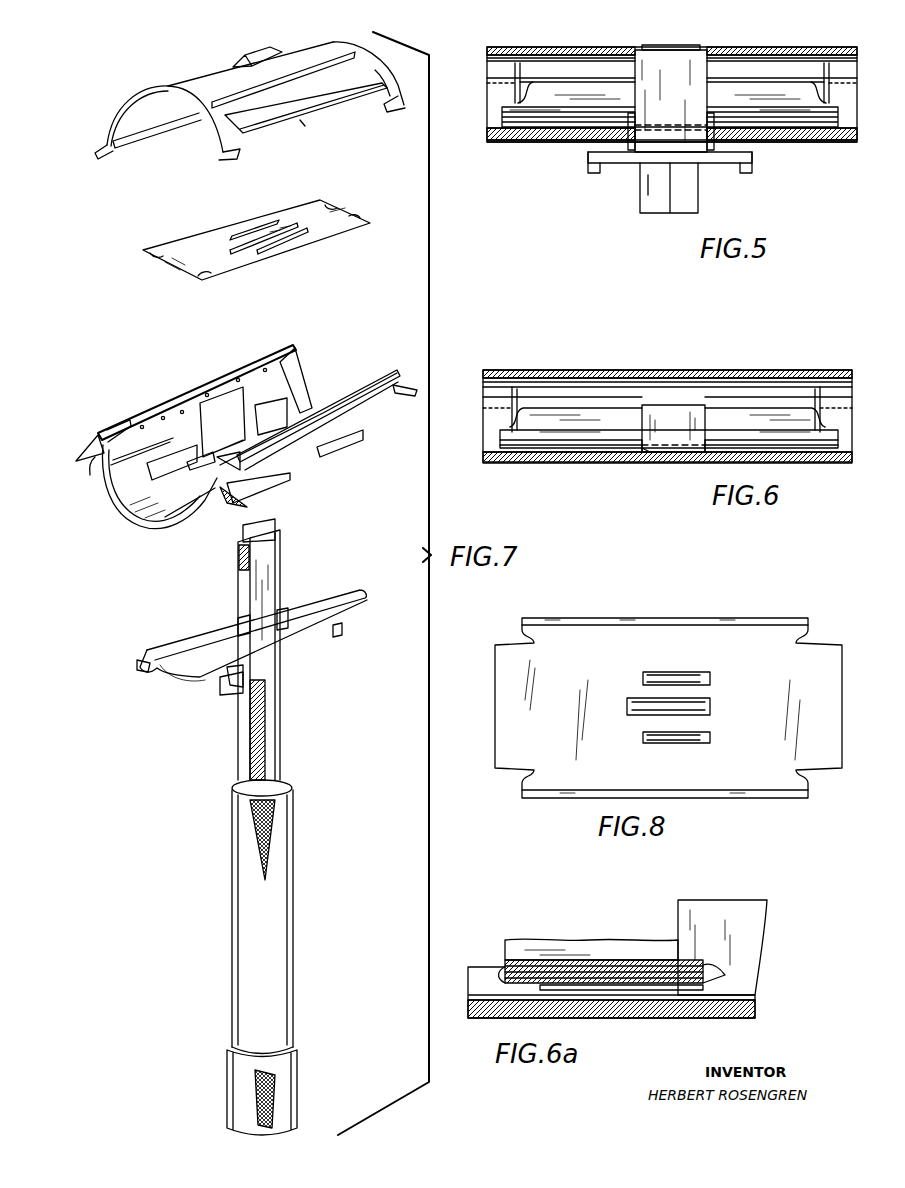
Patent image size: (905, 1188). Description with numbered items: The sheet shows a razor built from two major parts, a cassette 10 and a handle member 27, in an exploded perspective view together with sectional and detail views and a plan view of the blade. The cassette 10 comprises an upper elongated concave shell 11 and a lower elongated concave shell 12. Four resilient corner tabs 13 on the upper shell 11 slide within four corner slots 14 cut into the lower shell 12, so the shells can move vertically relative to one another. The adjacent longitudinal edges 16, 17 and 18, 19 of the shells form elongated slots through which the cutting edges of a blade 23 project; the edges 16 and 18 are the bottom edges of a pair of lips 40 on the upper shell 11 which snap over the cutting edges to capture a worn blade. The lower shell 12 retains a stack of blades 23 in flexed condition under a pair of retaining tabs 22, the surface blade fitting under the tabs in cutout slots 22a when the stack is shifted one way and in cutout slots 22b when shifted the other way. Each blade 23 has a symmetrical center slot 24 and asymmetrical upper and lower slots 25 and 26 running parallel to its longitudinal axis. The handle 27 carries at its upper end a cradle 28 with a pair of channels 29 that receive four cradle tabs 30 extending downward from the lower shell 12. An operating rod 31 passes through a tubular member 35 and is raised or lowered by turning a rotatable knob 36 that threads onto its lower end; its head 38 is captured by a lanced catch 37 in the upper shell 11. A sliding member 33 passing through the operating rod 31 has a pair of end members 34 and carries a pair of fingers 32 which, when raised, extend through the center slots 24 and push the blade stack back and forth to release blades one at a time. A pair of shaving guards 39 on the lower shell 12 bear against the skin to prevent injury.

In FIG. 5, the cassette 10 is at (469, 52).
In FIG. 6, the cassette 10 is at (484, 368).
In FIG. 7, the upper elongated concave shell 11 is at (253, 98).
In FIG. 5, the upper elongated concave shell 11 is at (790, 47).
In FIG. 6, the upper elongated concave shell 11 is at (768, 372).
In FIG. 7, the lower elongated concave shell 12 is at (244, 451).
In FIG. 5, the lower elongated concave shell 12 is at (651, 149).
In FIG. 6, the lower elongated concave shell 12 is at (644, 478).
In FIG. 6A, the lower elongated concave shell 12 is at (595, 1005).
In FIG. 7, the resilient corner tabs 13 is at (100, 152).
In FIG. 7, the corner slots 14 is at (300, 355).
In FIG. 7, the longitudinal edge 16 is at (300, 118).
In FIG. 7, the longitudinal edge 17 is at (244, 406).
In FIG. 7, the longitudinal edge 18 is at (150, 132).
In FIG. 7, the longitudinal edge 19 is at (160, 400).
In FIG. 7, the retaining tabs 22 is at (259, 423).
In FIG. 6, the retaining tabs 22 is at (675, 433).
In FIG. 8, the retaining tabs 22 is at (685, 672).
In FIG. 6A, the retaining tabs 22 is at (743, 933).
In FIG. 7, the cutout slots 22a is at (195, 468).
In FIG. 6, the cutout slots 22a is at (645, 462).
In FIG. 6A, the cutout slots 22a is at (725, 975).
In FIG. 7, the cutout slots 22b is at (262, 410).
In FIG. 6, the cutout slots 22b is at (700, 462).
In FIG. 7, the razor blade 23 is at (256, 240).
In FIG. 5, the razor blade 23 is at (502, 110).
In FIG. 6, the razor blade 23 is at (500, 436).
In FIG. 8, the razor blade 23 is at (668, 689).
In FIG. 6A, the razor blade 23 is at (603, 968).
In FIG. 7, the center slot 24 is at (240, 252).
In FIG. 8, the center slot 24 is at (710, 703).
In FIG. 6A, the center slot 24 is at (705, 978).
In FIG. 7, the upper slot 25 is at (270, 228).
In FIG. 8, the upper slot 25 is at (710, 676).
In FIG. 7, the lower slot 26 is at (285, 242).
In FIG. 8, the lower slot 26 is at (710, 740).
In FIG. 7, the handle member 27 is at (255, 957).
In FIG. 7, the cradle 28 is at (236, 667).
In FIG. 5, the cradle 28 is at (541, 144).
In FIG. 6, the cradle 28 is at (607, 464).
In FIG. 6A, the cradle 28 is at (638, 1018).
In FIG. 7, the channels 29 is at (140, 666).
In FIG. 7, the cradle tabs 30 is at (345, 455).
In FIG. 7, the operating rod 31 is at (264, 640).
In FIG. 5, the operating rod 31 is at (671, 114).
In FIG. 8, the operating rod 31 is at (650, 700).
In FIG. 7, the fingers 32 is at (240, 622).
In FIG. 5, the fingers 32 is at (628, 118).
In FIG. 8, the fingers 32 is at (710, 710).
In FIG. 5, the sliding member 33 is at (738, 172).
In FIG. 7, the end members 34 is at (345, 630).
In FIG. 5, the end members 34 is at (590, 175).
In FIG. 7, the tubular member 35 is at (295, 830).
In FIG. 7, the rotatable knob 36 is at (298, 1060).
In FIG. 7, the lanced catch 37 is at (248, 56).
In FIG. 7, the head 38 is at (258, 524).
In FIG. 5, the head 38 is at (660, 45).
In FIG. 7, the shaving guards 39 is at (88, 442).
In FIG. 7, the lips 40 is at (183, 120).